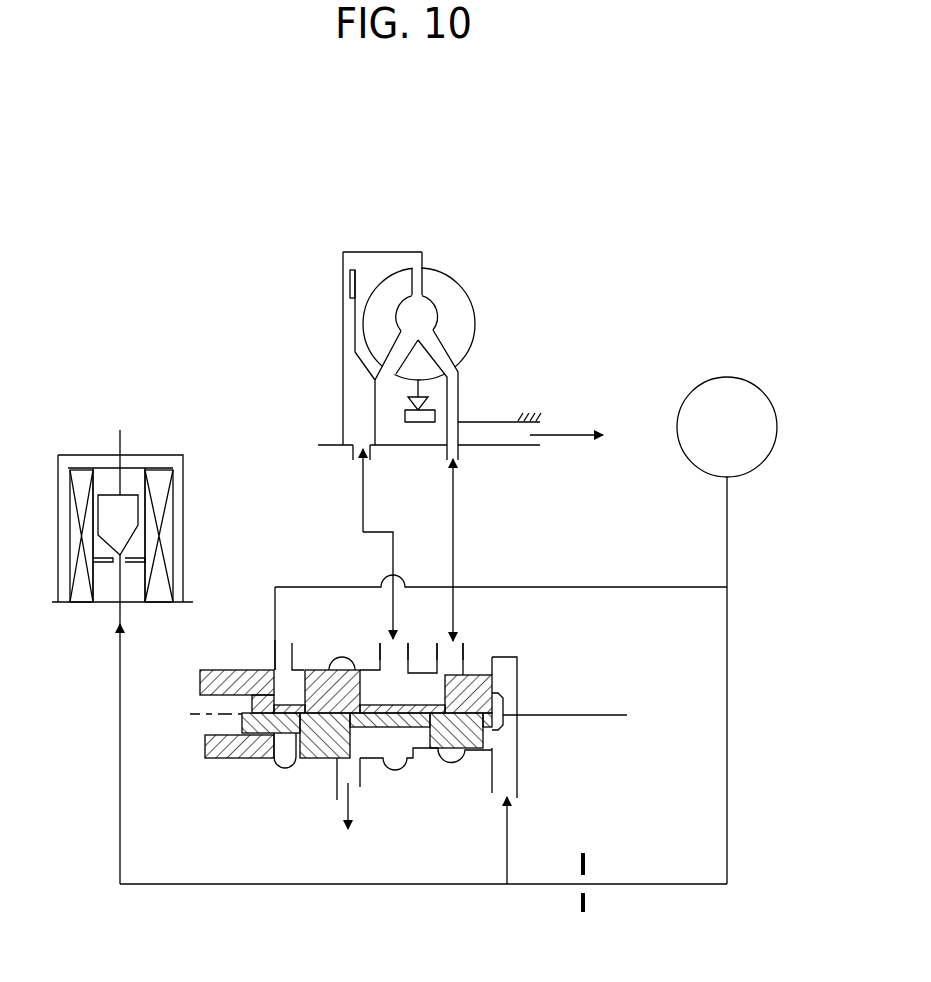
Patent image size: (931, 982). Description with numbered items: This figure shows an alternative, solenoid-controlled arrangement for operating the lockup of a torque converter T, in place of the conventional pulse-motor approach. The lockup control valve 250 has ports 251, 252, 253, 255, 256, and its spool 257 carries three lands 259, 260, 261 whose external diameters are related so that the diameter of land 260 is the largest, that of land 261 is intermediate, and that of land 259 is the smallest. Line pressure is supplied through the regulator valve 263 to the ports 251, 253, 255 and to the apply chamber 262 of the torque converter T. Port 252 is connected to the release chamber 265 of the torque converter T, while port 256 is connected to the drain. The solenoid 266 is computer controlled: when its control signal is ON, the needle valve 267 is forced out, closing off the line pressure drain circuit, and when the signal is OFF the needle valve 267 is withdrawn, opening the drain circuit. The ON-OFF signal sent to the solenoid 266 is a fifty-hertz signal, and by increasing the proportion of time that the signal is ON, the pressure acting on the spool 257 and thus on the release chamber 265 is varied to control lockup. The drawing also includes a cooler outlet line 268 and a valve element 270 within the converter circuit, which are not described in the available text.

The torque converter T is at (474, 269).
The lockup control valve 250 is at (519, 646).
The port 251 is at (273, 641).
The port 252 is at (390, 641).
The port 253 is at (453, 643).
The port 255 is at (501, 787).
The port 256 is at (345, 793).
The spool 257 is at (493, 730).
The land 259 is at (238, 758).
The land 260 is at (303, 764).
The land 261 is at (432, 778).
The apply chamber 262 is at (383, 257).
The regulator valve 263 is at (767, 396).
The release chamber 265 is at (357, 398).
The solenoid 266 is at (148, 438).
The needle valve 267 is at (108, 508).
The cooler line 268 is at (544, 434).
The relief valve 270 is at (346, 264).